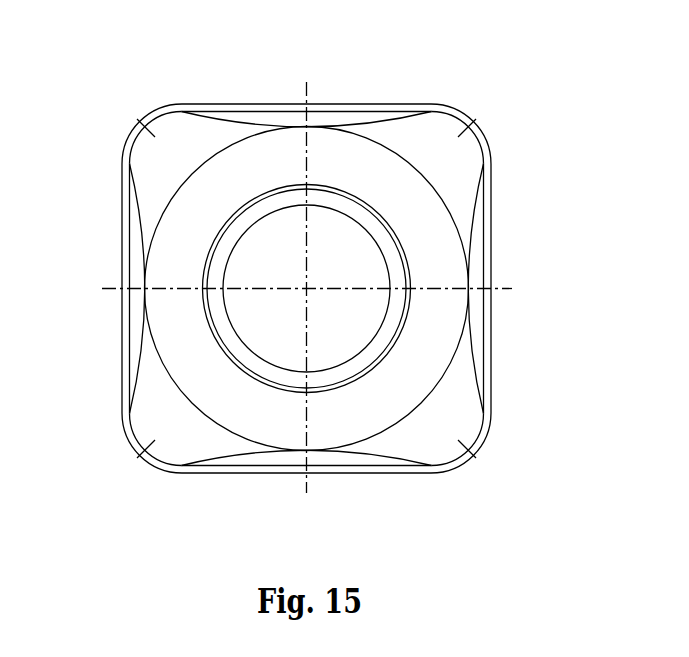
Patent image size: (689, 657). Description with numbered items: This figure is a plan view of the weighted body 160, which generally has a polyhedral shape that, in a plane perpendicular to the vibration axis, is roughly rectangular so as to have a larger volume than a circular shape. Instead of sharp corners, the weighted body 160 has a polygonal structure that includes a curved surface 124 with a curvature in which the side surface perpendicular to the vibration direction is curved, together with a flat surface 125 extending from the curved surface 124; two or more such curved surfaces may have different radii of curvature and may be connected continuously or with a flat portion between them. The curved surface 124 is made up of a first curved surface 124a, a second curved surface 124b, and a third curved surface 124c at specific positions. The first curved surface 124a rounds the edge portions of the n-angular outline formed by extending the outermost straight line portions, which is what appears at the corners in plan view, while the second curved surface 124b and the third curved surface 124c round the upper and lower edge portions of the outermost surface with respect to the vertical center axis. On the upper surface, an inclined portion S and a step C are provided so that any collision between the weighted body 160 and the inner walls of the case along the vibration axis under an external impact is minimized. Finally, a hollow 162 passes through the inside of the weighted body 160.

The curved surface 124 is at (152, 23).
The first curved surface 124a is at (508, 468).
The second curved surface 124b is at (343, 522).
The third curved surface 124c is at (176, 76).
The flat surface 125 is at (255, 423).
The weighted body 160 is at (306, 78).
The hollow 162 is at (253, 246).
The step C is at (140, 126).
The inclined portion S is at (138, 302).